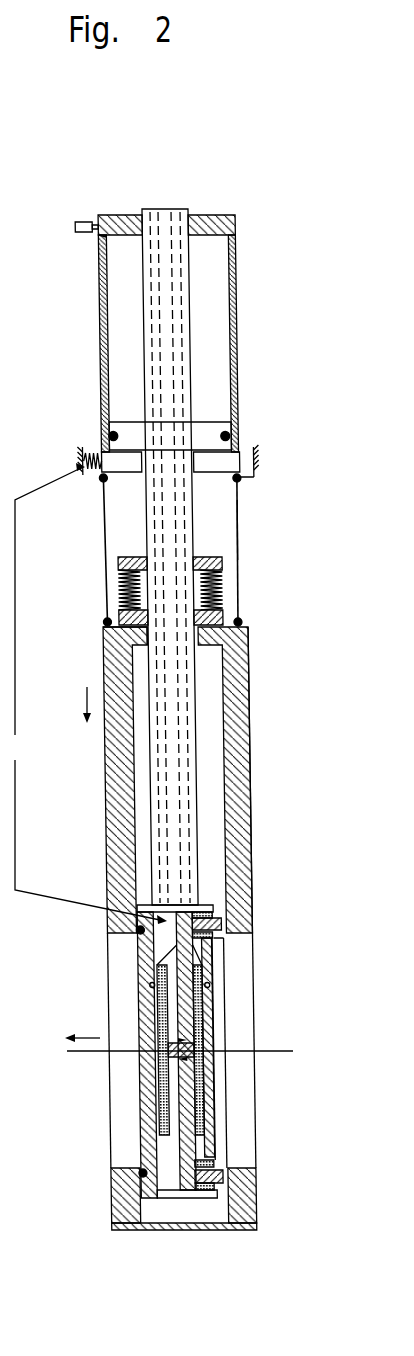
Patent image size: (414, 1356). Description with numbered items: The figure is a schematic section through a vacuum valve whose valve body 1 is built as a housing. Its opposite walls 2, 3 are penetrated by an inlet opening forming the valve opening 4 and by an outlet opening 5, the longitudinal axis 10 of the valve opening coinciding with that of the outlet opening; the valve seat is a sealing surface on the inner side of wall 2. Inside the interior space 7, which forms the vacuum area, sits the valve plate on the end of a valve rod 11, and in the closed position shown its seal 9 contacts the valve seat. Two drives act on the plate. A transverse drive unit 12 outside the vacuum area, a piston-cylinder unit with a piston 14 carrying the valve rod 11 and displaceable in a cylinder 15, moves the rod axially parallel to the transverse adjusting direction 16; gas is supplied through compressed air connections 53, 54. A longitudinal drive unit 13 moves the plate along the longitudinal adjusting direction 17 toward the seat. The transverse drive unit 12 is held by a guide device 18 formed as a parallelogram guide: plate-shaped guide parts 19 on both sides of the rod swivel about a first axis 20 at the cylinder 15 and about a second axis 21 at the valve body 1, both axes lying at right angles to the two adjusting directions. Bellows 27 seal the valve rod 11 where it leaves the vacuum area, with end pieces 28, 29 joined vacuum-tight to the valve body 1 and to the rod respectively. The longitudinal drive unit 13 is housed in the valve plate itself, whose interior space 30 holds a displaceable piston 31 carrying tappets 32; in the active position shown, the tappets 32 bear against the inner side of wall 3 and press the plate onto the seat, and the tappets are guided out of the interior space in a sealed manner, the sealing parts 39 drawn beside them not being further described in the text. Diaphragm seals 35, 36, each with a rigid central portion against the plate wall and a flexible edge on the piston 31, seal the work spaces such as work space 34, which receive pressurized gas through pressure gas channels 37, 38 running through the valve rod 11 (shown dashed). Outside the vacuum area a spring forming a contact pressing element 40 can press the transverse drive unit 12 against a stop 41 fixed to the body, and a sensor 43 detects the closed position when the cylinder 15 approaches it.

The valve body 1 is at (258, 705).
The wall 2 is at (121, 777).
The wall 3 is at (236, 790).
The valve opening 4 is at (119, 993).
The outlet opening 5 is at (241, 1003).
The interior space 7 is at (207, 752).
The seal 9 is at (139, 1177).
The longitudinal axis 10 is at (100, 1053).
The valve rod 11 is at (180, 675).
The transverse drive unit 12 is at (247, 268).
The longitudinal drive unit 13 is at (85, 693).
The piston 14 is at (199, 428).
The cylinder 15 is at (236, 325).
The transverse adjusting direction 16 is at (84, 700).
The longitudinal adjusting direction 17 is at (78, 1030).
The guide device 18 is at (250, 537).
The guide part 19 is at (241, 513).
The first axis 20 is at (242, 478).
The second axis 21 is at (242, 620).
The bellows 27 is at (218, 590).
The end piece 28 is at (122, 572).
The end piece 29 is at (128, 641).
The interior space 30 is at (168, 1182).
The piston 31 is at (188, 1183).
The tappet 32 is at (225, 920).
The work space 34 is at (178, 1115).
The diaphragm seal 35 is at (208, 1087).
The diaphragm seal 36 is at (186, 1127).
The pressure gas channel 37 is at (211, 985).
The pressure gas channel 38 is at (155, 983).
The spring washer 39 is at (214, 912).
The contact pressing element 40 is at (90, 473).
The stop 41 is at (258, 455).
The sensor 43 is at (85, 222).
The compressed air connection 53 is at (96, 237).
The compressed air connection 54 is at (100, 448).